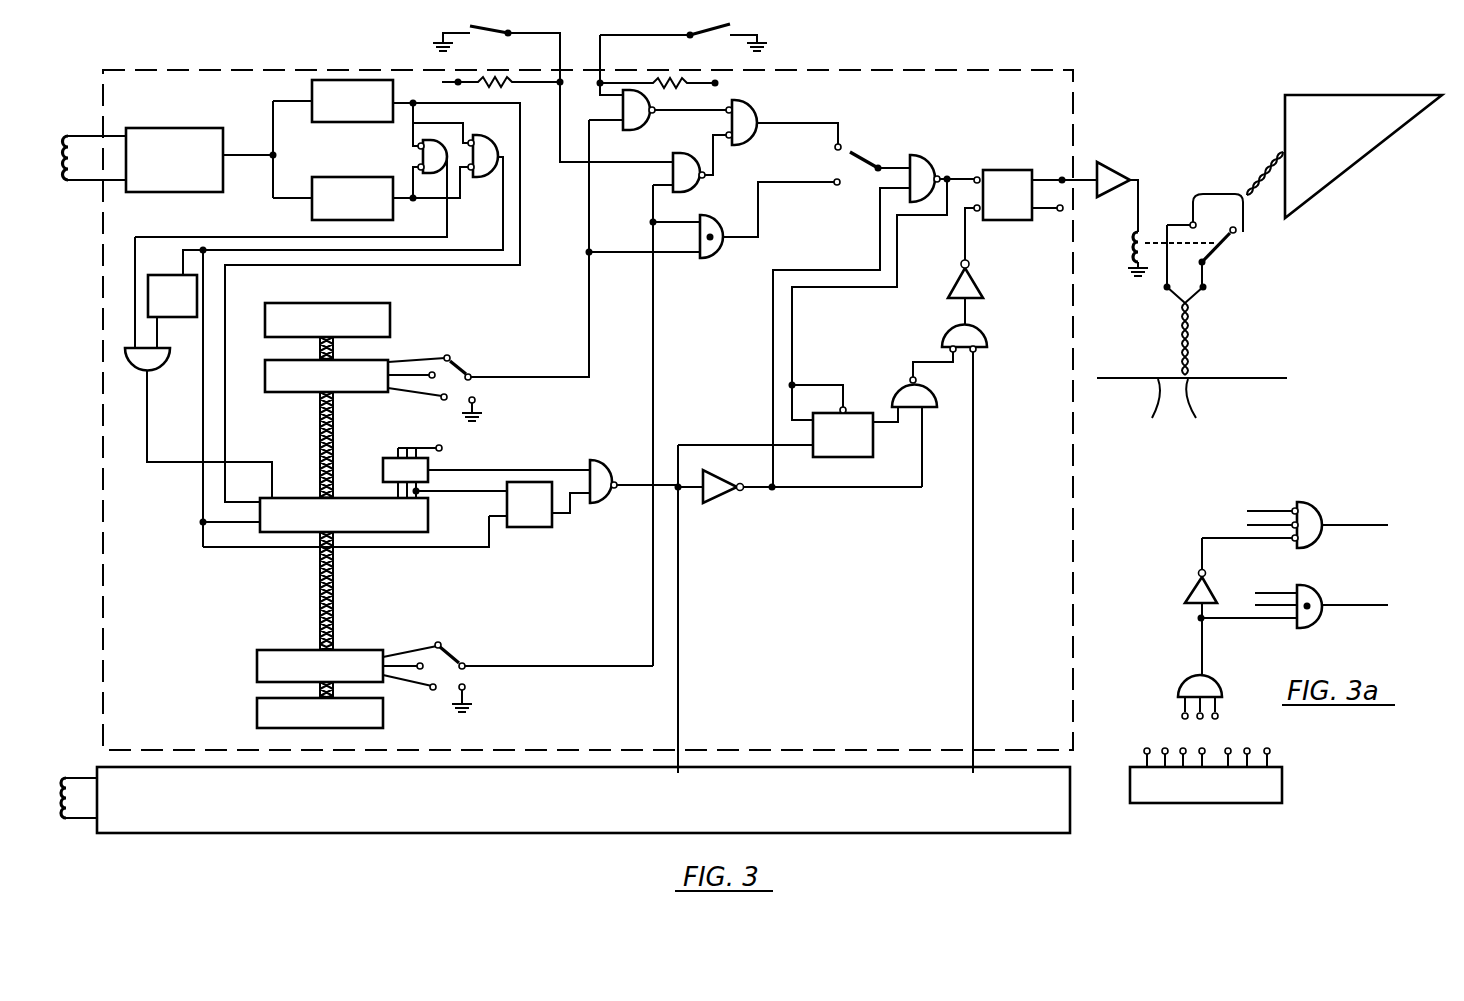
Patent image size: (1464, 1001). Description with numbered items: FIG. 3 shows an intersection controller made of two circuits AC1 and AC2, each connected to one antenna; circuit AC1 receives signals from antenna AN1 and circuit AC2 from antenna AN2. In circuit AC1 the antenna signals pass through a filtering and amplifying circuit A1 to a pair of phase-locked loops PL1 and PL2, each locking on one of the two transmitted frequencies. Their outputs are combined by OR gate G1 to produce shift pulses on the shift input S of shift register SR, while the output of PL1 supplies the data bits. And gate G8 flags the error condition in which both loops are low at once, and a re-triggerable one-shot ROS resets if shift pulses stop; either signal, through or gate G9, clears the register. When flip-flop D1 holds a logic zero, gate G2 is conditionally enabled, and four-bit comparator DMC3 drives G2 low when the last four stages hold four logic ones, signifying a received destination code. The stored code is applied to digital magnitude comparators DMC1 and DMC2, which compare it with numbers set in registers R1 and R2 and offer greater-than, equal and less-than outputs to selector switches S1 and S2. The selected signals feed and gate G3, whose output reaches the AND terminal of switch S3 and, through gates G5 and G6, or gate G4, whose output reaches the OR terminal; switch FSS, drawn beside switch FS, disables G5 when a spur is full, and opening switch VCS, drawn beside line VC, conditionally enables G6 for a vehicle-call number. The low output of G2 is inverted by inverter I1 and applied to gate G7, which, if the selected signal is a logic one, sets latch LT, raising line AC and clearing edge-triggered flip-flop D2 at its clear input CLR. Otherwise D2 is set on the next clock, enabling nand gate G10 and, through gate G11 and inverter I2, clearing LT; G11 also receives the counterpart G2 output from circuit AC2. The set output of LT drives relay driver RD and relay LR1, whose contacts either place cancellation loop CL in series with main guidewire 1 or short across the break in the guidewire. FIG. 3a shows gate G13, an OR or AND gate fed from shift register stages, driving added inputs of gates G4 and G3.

In FIG. 3, the antenna AN1 is at (58, 140).
In FIG. 3, the antenna AN2 is at (56, 784).
In FIG. 3, the filtering and amplifying circuit A1 is at (193, 128).
In FIG. 3, the phase-locked loop circuit PL1 is at (372, 291).
In FIG. 3, the phase-locked loop circuit PL2 is at (345, 198).
In FIG. 3, the and gate G8 is at (291, 170).
In FIG. 3, the OR gate G1 is at (497, 140).
In FIG. 3, the re-triggerable one-shot ROS is at (172, 299).
In FIG. 3, the or gate G9 is at (155, 364).
In FIG. 3, the switch VCS is at (472, 44).
In FIG. 3, the voice control line VC is at (558, 50).
In FIG. 3, the function switch FS is at (600, 50).
In FIG. 3, the switch FSS is at (728, 48).
In FIG. 3, the gate G5 is at (659, 115).
In FIG. 3, the or gate G4 is at (752, 114).
In FIG. 3a, the or gate G4 is at (1302, 506).
In FIG. 3, the terminal OR is at (818, 138).
In FIG. 3, the selector switch S3 is at (880, 154).
In FIG. 3, the gate G6 is at (689, 172).
In FIG. 3, the and gate G3 is at (710, 225).
In FIG. 3a, the and gate G3 is at (1306, 596).
In FIG. 3, the terminal AND is at (813, 193).
In FIG. 3, the gate G7 is at (916, 166).
In FIG. 3, the latch LT is at (1035, 195).
In FIG. 3, the line AC is at (1052, 168).
In FIG. 3, the inverter I2 is at (970, 266).
In FIG. 3, the gate G11 is at (948, 340).
In FIG. 3, the nand gate G10 is at (904, 390).
In FIG. 3, the edge-triggered flip-flop D2 is at (840, 457).
In FIG. 3, the clear input CLR is at (821, 402).
In FIG. 3, the inverter I1 is at (716, 500).
In FIG. 3, the gate G2 is at (604, 498).
In FIG. 3, the flip-flop D1 is at (542, 527).
In FIG. 3, the shift line S is at (345, 531).
In FIG. 3, the four-bit digital comparator DMC3 is at (486, 462).
In FIG. 3, the shift register SR is at (372, 498).
In FIG. 3a, the shift register SR is at (1206, 775).
In FIG. 3, the register R1 is at (327, 320).
In FIG. 3, the first digital magnitude comparator DMC1 is at (357, 377).
In FIG. 3, the selector switch S1 is at (468, 360).
In FIG. 3, the second digital magnitude comparator DMC2 is at (349, 666).
In FIG. 3, the selector switch S2 is at (458, 648).
In FIG. 3, the register R2 is at (320, 713).
In FIG. 3, the relay driver amplifier RD is at (1115, 197).
In FIG. 3, the cancellation loop relay LR1 is at (1185, 284).
In FIG. 3, the main guidewire 1 is at (1192, 402).
In FIG. 3, the cancellation loop CL is at (1337, 175).
In FIG. 3, the circuit AC1 is at (102, 460).
In FIG. 3, the circuit AC2 is at (498, 834).
In FIG. 3a, the gate G13 is at (1188, 684).